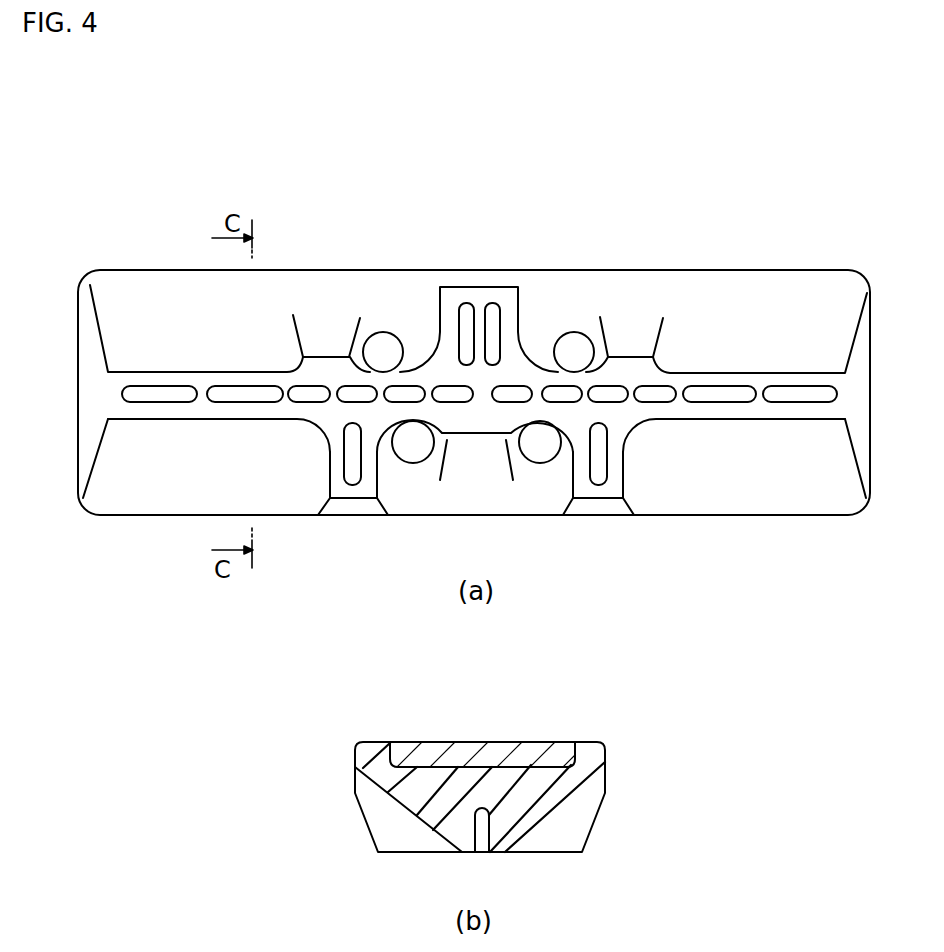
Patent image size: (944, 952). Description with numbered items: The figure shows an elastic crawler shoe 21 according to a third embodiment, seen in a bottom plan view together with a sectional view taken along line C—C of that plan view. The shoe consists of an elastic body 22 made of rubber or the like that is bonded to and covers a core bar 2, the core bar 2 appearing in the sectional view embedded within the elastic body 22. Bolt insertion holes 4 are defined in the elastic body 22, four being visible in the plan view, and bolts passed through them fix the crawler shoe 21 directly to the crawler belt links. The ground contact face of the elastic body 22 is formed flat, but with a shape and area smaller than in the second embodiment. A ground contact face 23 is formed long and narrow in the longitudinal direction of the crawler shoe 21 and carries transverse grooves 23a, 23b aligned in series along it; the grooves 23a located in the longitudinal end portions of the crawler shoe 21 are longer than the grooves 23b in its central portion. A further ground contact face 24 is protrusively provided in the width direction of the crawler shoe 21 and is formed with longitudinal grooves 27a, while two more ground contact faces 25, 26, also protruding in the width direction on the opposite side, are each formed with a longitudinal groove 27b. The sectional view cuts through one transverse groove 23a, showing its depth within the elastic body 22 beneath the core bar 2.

The core bar 2 is at (445, 750).
The bolt insertion holes 4 is at (383, 338).
The elastic crawler shoe 21 is at (770, 263).
The elastic body 22 is at (553, 784).
The ground contact face 23 is at (713, 406).
The transverse grooves 23a is at (227, 395).
The transverse grooves 23b is at (353, 392).
The ground contact face 24 is at (468, 295).
The ground contact face 25 is at (358, 496).
The ground contact face 26 is at (613, 495).
The longitudinal grooves 27a is at (470, 327).
The longitudinal grooves 27b is at (350, 455).